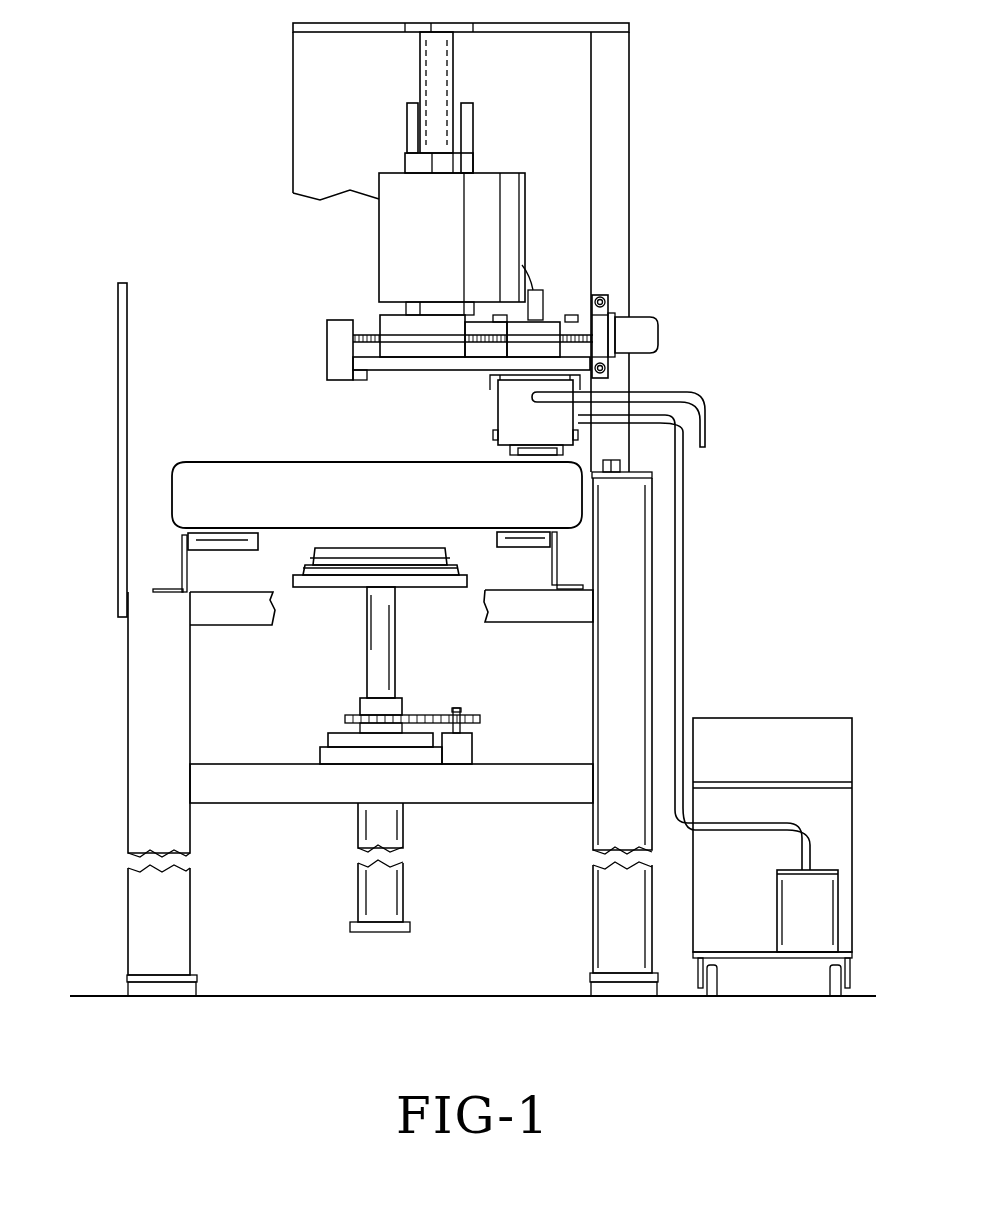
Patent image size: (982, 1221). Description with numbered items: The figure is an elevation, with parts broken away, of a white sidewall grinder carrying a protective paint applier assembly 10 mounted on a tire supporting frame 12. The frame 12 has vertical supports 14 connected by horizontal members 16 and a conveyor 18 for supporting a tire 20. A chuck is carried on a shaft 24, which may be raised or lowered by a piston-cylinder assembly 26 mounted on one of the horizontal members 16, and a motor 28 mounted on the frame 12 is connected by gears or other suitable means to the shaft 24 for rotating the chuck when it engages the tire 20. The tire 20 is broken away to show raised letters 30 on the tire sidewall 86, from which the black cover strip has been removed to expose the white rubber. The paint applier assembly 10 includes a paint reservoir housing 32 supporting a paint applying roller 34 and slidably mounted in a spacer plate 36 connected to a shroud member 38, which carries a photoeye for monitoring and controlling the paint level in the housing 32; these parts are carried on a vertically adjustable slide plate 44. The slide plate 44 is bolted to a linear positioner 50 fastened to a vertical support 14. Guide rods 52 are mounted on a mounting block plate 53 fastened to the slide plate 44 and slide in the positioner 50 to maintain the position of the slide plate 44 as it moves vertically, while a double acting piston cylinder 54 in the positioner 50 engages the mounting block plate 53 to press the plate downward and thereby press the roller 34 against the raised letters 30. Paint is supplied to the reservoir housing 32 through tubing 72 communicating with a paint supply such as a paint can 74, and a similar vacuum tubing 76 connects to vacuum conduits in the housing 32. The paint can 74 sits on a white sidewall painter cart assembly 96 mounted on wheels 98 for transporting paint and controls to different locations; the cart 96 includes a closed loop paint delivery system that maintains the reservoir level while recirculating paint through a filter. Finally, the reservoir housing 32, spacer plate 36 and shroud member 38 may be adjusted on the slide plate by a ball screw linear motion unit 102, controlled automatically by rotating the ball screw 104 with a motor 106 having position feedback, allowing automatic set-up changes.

The protective paint applier assembly 10 is at (587, 385).
The tire supporting frame 12 is at (642, 567).
The vertical supports 14 is at (617, 133).
The horizontal members 16 is at (533, 612).
The conveyor 18 is at (200, 545).
The tire 20 is at (180, 462).
The shaft 24 is at (378, 658).
The piston-cylinder assembly 26 is at (375, 837).
The motor 28 is at (463, 752).
The raised letters 30 is at (535, 458).
The paint reservoir housing 32 is at (515, 407).
The paint applying roller 34 is at (512, 455).
The spacer plate 36 is at (490, 373).
The shroud member 38 is at (573, 325).
The slide plate 44 is at (363, 360).
The linear positioner 50 is at (402, 200).
The guide rods 52 is at (417, 113).
The mounting block plate 53 is at (390, 317).
The double acting piston cylinder 54 is at (437, 90).
The tubing 72 is at (680, 662).
The paint can 74 is at (807, 943).
The vacuum tubing 76 is at (707, 425).
The tire sidewall 86 is at (200, 462).
The white sidewall painter cart assembly 96 is at (747, 957).
The wheels 98 is at (715, 987).
The ball screw linear motion unit 102 is at (520, 330).
The ball screw 104 is at (392, 322).
The motor 106 is at (658, 330).